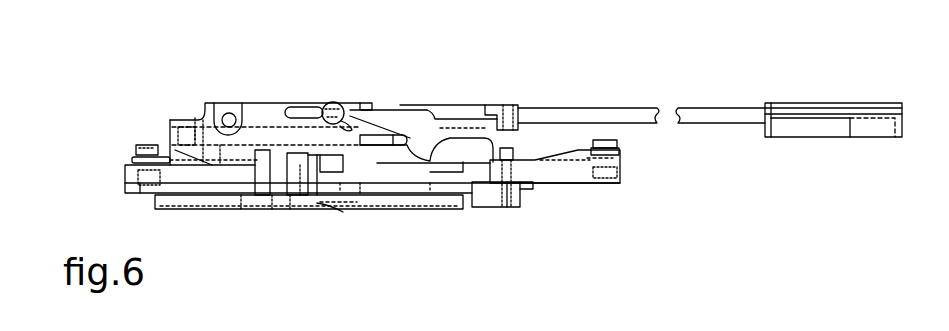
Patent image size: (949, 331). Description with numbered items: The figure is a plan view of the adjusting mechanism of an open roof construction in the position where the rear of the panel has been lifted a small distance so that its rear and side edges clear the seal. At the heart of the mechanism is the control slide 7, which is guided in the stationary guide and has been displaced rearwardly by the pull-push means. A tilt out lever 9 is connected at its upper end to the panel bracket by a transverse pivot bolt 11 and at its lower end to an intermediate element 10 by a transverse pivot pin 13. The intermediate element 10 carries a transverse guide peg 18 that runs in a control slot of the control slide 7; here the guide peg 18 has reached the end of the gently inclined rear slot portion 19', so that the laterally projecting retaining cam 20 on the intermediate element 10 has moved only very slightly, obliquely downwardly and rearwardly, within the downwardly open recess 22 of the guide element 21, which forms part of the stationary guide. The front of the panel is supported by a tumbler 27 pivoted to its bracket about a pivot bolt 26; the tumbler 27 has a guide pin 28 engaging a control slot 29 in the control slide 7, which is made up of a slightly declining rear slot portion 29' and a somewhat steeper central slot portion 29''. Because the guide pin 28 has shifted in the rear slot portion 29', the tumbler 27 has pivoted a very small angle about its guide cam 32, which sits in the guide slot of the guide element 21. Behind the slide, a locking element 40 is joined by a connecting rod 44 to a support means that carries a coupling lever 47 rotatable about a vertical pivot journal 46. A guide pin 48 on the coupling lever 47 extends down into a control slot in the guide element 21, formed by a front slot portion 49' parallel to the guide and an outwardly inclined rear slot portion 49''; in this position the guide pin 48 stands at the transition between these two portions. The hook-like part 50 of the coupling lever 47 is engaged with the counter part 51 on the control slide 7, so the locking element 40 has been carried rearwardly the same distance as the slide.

The control slide 7 is at (118, 193).
The tilt out lever 9 is at (569, 177).
The intermediate element 10 is at (482, 208).
The pivot bolt 11 is at (613, 157).
The pivot pin 13 is at (507, 207).
The guide peg 18 is at (317, 205).
The rear slot portion 19' is at (356, 238).
The retaining cam 20 is at (307, 155).
The guide element 21 is at (194, 118).
The recess 22 is at (288, 155).
The pivot bolt 26 is at (134, 153).
The tumbler 27 is at (123, 171).
The guide pin 28 is at (272, 209).
The control slot 29 is at (309, 235).
The rear slot portion 29' is at (307, 235).
The central slot portion 29'' is at (246, 235).
The guide cam 32 is at (167, 118).
The locking element 40 is at (840, 103).
The connecting rod 44 is at (681, 118).
The pivot journal 46 is at (418, 130).
The coupling lever 47 is at (390, 123).
The guide pin 48 is at (334, 118).
The front slot portion 49' is at (306, 74).
The rear slot portion 49'' is at (388, 69).
The hook-like part 50 is at (469, 142).
The counter part 51 is at (475, 142).